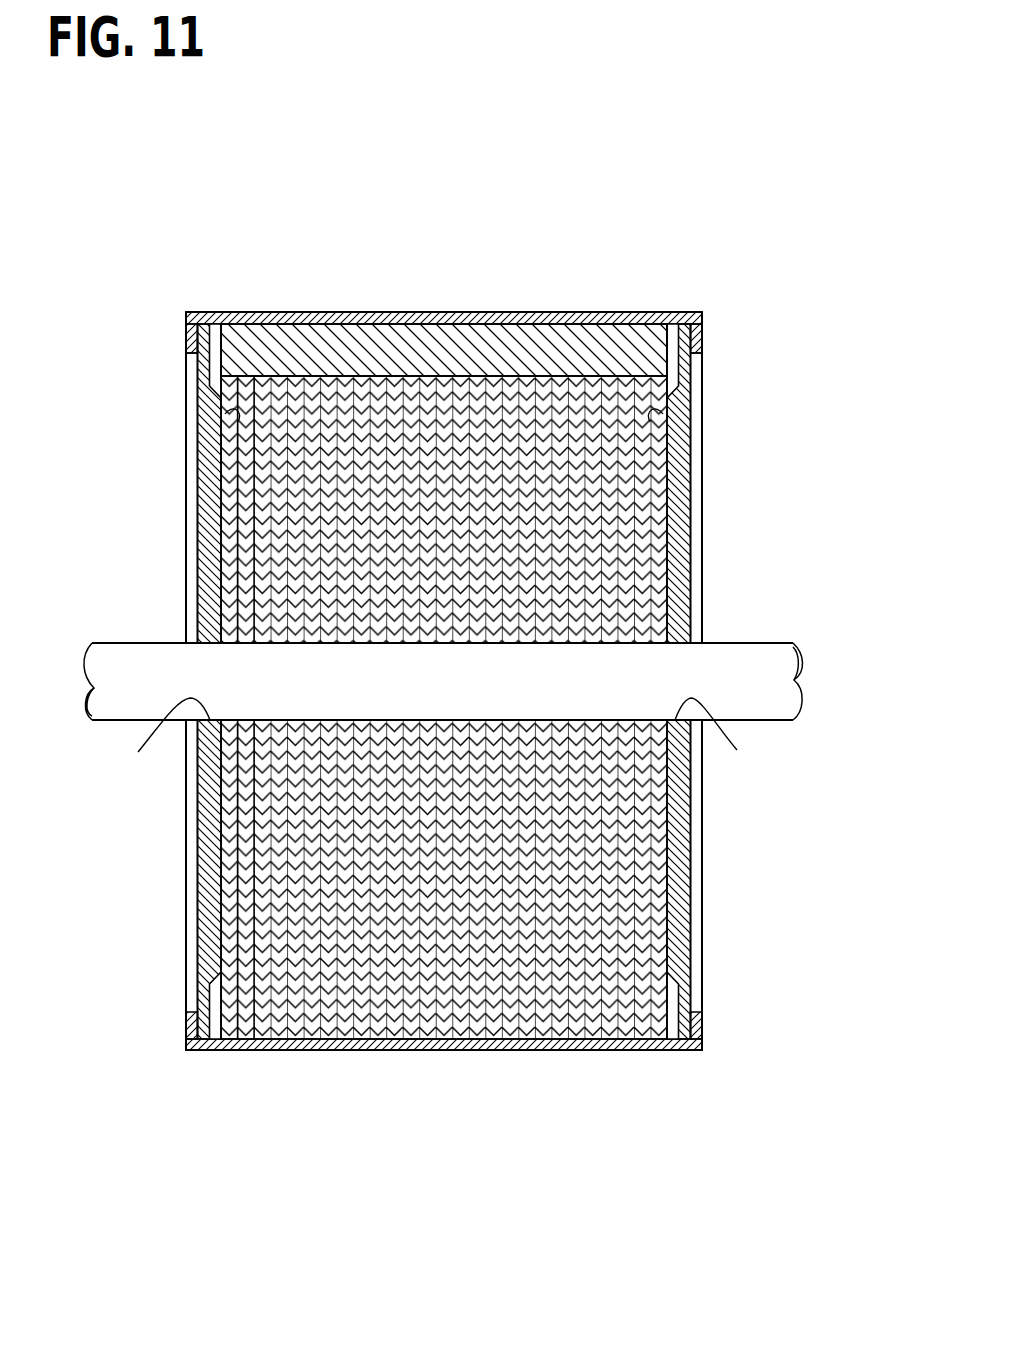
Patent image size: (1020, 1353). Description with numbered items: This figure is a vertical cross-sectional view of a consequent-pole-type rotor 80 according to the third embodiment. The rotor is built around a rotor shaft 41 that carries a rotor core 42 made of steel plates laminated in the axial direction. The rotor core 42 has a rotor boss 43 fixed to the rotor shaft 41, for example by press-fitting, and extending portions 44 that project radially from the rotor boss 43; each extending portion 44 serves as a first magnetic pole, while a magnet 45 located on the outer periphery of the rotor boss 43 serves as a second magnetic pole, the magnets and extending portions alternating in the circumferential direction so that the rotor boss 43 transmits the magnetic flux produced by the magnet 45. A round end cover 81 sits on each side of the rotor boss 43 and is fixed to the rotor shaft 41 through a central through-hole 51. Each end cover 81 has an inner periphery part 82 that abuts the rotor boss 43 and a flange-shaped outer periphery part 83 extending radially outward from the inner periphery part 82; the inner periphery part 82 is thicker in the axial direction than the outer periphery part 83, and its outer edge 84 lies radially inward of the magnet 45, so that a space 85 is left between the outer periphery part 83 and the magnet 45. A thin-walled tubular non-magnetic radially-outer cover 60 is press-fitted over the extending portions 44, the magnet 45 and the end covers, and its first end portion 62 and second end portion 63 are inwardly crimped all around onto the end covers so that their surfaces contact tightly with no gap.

The rotor shaft 41 is at (783, 697).
The rotor core 42 is at (444, 772).
The rotor boss 43 is at (408, 860).
The extending portion 44 is at (396, 1015).
The magnet 45 is at (379, 356).
The through-hole 51 is at (439, 738).
The radially-outer cover 60 is at (444, 318).
The first end portion 62 is at (190, 332).
The second end portion 63 is at (697, 340).
The rotor 80 is at (444, 683).
The end cover 81 is at (444, 632).
The inner periphery part 82 is at (210, 570).
The outer periphery part 83 is at (192, 356).
The outer edge 84 is at (230, 414).
The space 85 is at (214, 337).